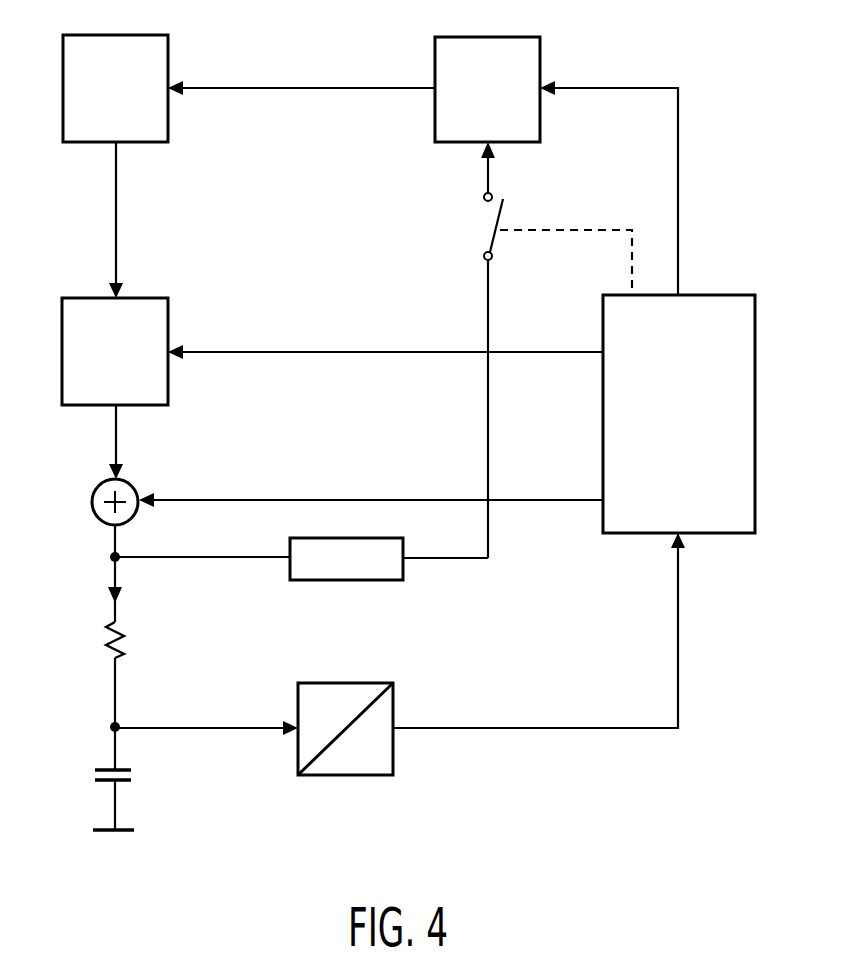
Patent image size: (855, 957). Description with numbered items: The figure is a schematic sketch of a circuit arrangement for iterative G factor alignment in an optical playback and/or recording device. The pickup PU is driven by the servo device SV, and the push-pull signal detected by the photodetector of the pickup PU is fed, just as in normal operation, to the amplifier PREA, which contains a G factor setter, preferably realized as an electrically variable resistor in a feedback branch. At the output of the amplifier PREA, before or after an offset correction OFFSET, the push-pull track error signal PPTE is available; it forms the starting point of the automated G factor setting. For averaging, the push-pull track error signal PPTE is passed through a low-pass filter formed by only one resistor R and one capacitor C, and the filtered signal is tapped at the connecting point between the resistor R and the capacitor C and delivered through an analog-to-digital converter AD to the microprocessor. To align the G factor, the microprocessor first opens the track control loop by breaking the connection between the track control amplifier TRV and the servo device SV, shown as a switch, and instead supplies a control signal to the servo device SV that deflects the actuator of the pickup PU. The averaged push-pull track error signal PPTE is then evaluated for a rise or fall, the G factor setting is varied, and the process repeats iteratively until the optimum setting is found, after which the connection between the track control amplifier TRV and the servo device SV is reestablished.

The pickup PU is at (115, 88).
The servo device SV is at (487, 89).
The amplifier PREA is at (115, 351).
The push-pull track error signal PPTE is at (142, 442).
The offset correction OFFSET is at (135, 480).
The track control amplifier TRV is at (301, 544).
The resistor R is at (124, 640).
The capacitor C is at (121, 797).
The analog-to-digital converter AD is at (353, 682).